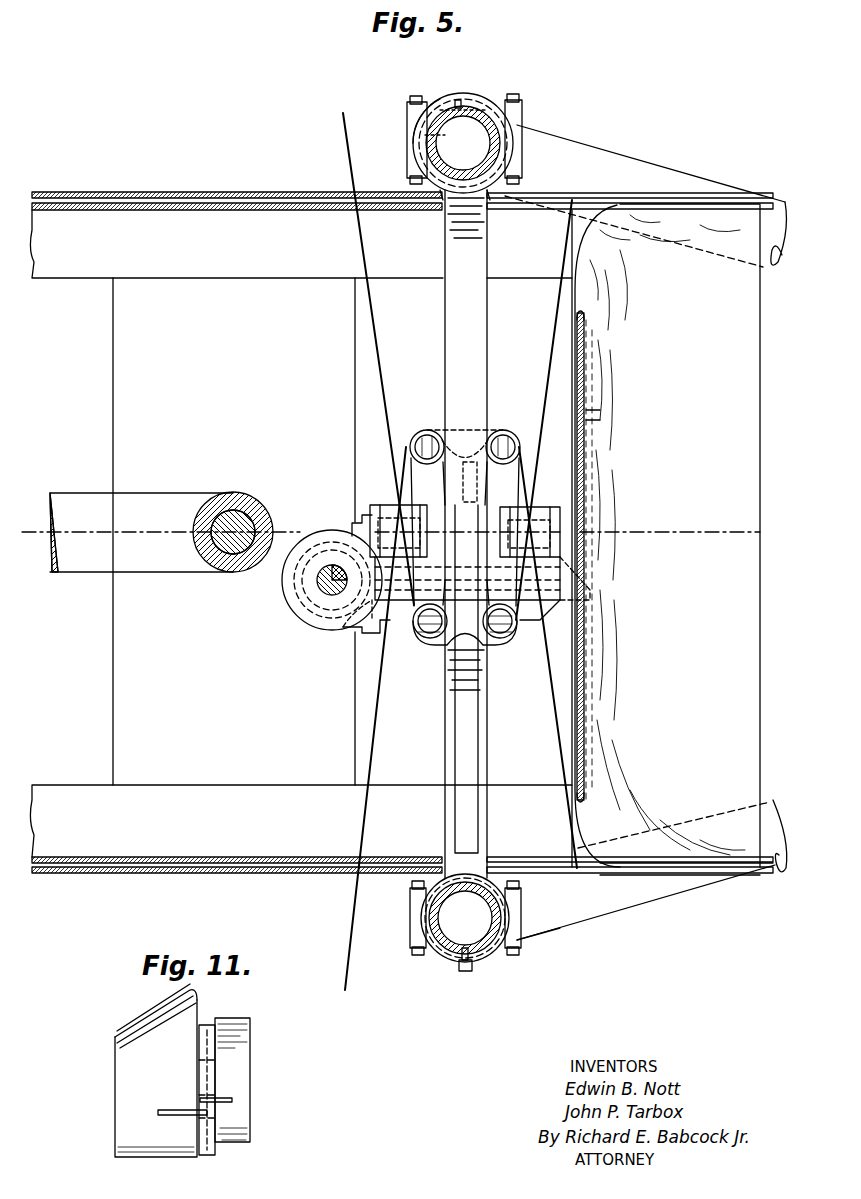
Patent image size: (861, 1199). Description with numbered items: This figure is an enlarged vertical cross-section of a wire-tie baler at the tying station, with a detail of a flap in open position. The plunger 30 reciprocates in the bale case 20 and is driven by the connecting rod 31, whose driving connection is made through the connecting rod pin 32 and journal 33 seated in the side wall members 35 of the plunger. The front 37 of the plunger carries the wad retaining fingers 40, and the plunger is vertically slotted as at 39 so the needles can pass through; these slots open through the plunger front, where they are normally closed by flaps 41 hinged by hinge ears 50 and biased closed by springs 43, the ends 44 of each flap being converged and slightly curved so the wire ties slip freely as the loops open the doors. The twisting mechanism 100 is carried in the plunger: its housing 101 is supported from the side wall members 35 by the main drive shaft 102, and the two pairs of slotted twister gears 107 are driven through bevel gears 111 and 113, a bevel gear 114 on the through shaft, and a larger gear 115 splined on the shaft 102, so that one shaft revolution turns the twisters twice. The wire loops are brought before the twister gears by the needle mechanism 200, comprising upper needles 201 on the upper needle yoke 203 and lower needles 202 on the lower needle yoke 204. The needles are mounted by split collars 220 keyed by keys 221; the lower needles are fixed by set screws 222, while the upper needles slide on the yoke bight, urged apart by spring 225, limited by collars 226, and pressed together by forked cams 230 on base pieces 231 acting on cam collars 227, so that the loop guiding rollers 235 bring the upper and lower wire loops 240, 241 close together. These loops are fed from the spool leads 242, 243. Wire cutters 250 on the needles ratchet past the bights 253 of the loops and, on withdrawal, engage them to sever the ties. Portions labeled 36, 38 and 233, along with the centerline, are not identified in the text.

In FIG. 5, the bale case 20 is at (171, 191).
In FIG. 5, the plunger 30 is at (112, 364).
In FIG. 5, the connecting rod 31 is at (141, 532).
In FIG. 5, the connecting rod pin 32 is at (212, 545).
In FIG. 5, the journal 33 is at (248, 497).
In FIG. 5, the side wall member 35 is at (291, 531).
In FIG. 5, the frame beam 36 is at (301, 533).
In FIG. 5, the front of the plunger 37 is at (545, 590).
In FIG. 5, the rail strip 38 is at (313, 858).
In FIG. 5, the vertical slot 39 is at (368, 206).
In FIG. 5, the wad retaining finger 40 is at (640, 262).
In FIG. 5, the flap 41 is at (585, 388).
In FIG. 11, the flap 41 is at (114, 1090).
In FIG. 5, the spring 43 is at (600, 416).
In FIG. 11, the spring 43 is at (222, 1105).
In FIG. 5, the flap end 44 is at (585, 322).
In FIG. 11, the flap end 44 is at (140, 1017).
In FIG. 11, the hinge ear 50 is at (252, 1072).
In FIG. 5, the twisting mechanism 100 is at (336, 584).
In FIG. 5, the housing 101 is at (322, 588).
In FIG. 5, the main drive shaft 102 is at (318, 582).
In FIG. 5, the twister gear 107 is at (372, 522).
In FIG. 5, the bevel gear 111 is at (420, 570).
In FIG. 5, the bevel gear 113 is at (348, 628).
In FIG. 5, the bevel gear 114 is at (335, 625).
In FIG. 5, the gear 115 is at (298, 610).
In FIG. 5, the needle mechanism 200 is at (615, 532).
In FIG. 5, the upper needle 201 is at (490, 266).
In FIG. 5, the lower needle 202 is at (490, 820).
In FIG. 5, the upper needle yoke 203 is at (490, 152).
In FIG. 5, the lower needle yoke 204 is at (585, 922).
In FIG. 5, the split collar 220 is at (500, 110).
In FIG. 5, the key 221 is at (457, 105).
In FIG. 5, the set screw 222 is at (475, 968).
In FIG. 5, the spring 225 is at (425, 135).
In FIG. 5, the collar 226 is at (470, 108).
In FIG. 5, the cam collar 227 is at (445, 100).
In FIG. 5, the forked cam 230 is at (520, 110).
In FIG. 5, the base piece 231 is at (410, 185).
In FIG. 5, the center line 233 is at (32, 528).
In FIG. 5, the loop guiding roller 235 is at (425, 430).
In FIG. 5, the upper wire loop 240 is at (378, 345).
In FIG. 5, the lower wire loop 241 is at (547, 715).
In FIG. 5, the spool lead 242 is at (658, 198).
In FIG. 5, the spool lead 243 is at (725, 875).
In FIG. 5, the wire cutter 250 is at (472, 500).
In FIG. 5, the bight 253 is at (480, 420).